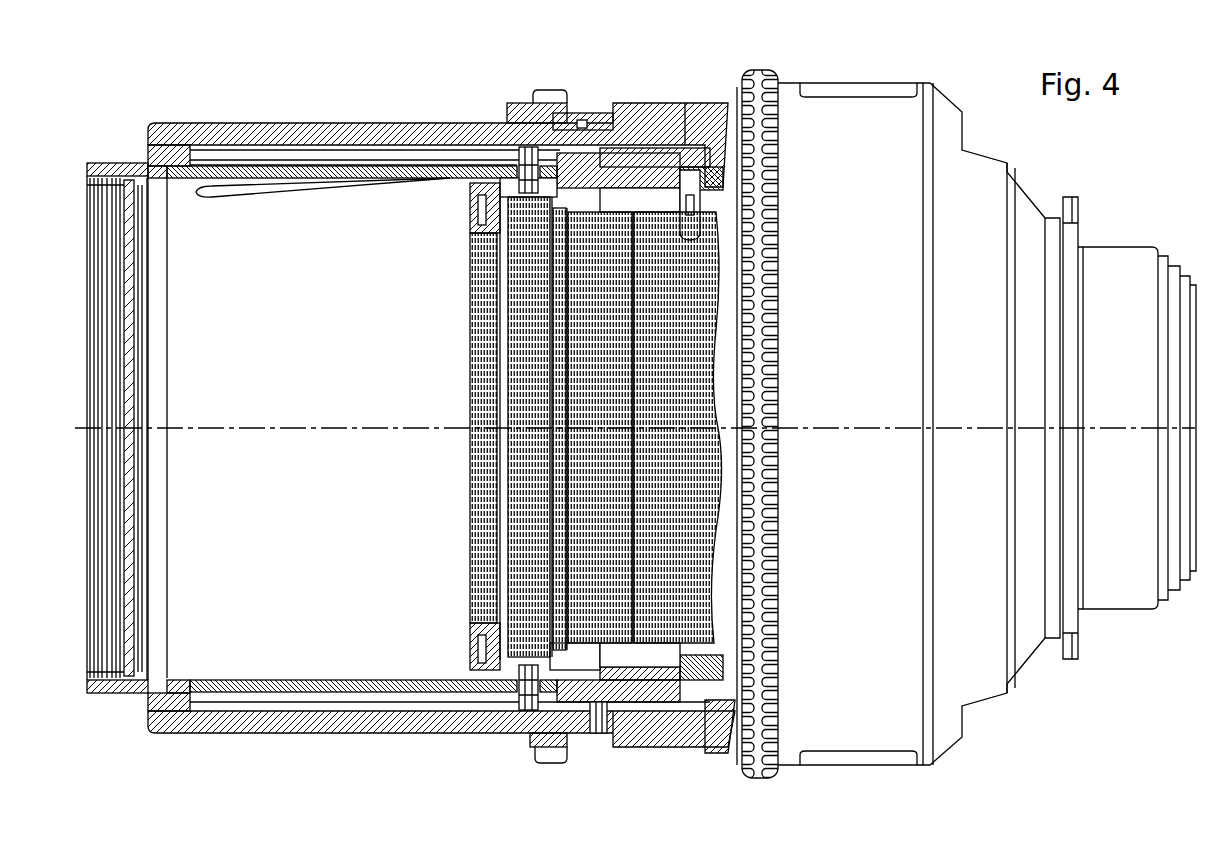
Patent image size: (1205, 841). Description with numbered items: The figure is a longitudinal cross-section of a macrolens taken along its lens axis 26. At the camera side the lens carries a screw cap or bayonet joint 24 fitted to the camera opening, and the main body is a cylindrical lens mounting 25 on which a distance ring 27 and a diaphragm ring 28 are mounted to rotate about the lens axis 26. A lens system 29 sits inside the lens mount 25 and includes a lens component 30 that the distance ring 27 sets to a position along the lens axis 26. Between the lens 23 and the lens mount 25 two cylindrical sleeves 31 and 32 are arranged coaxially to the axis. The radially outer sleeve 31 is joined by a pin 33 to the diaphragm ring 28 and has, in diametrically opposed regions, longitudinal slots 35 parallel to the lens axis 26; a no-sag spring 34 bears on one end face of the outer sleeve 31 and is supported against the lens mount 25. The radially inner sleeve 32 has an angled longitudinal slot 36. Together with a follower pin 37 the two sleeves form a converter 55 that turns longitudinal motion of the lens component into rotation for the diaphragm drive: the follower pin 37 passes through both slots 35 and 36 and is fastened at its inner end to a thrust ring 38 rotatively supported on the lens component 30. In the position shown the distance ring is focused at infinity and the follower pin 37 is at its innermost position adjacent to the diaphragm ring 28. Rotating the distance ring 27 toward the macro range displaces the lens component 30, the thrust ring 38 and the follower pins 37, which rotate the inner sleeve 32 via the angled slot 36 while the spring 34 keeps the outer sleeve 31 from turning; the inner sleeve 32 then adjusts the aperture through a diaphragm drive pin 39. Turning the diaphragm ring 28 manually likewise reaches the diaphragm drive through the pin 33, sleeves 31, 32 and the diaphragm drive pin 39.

The lens 23 is at (1028, 166).
The bayonet joint 24 is at (1133, 252).
The lens mounting 25 is at (353, 132).
The lens axis 26 is at (263, 428).
The distance ring 27 is at (782, 88).
The diaphragm ring 28 is at (545, 92).
The lens system 29 is at (468, 521).
The lens component 30 is at (474, 356).
The radially outer sleeve 31 is at (408, 158).
The radially inner sleeve 32 is at (437, 180).
The pin 33 is at (616, 738).
The no-sag spring 34 is at (712, 710).
The longitudinal slot 35 is at (285, 158).
The longitudinal slot 36 is at (215, 193).
The follower pin 37 is at (520, 165).
The thrust ring 38 is at (474, 660).
The diaphragm drive pin 39 is at (685, 103).
The converter 55 is at (463, 186).